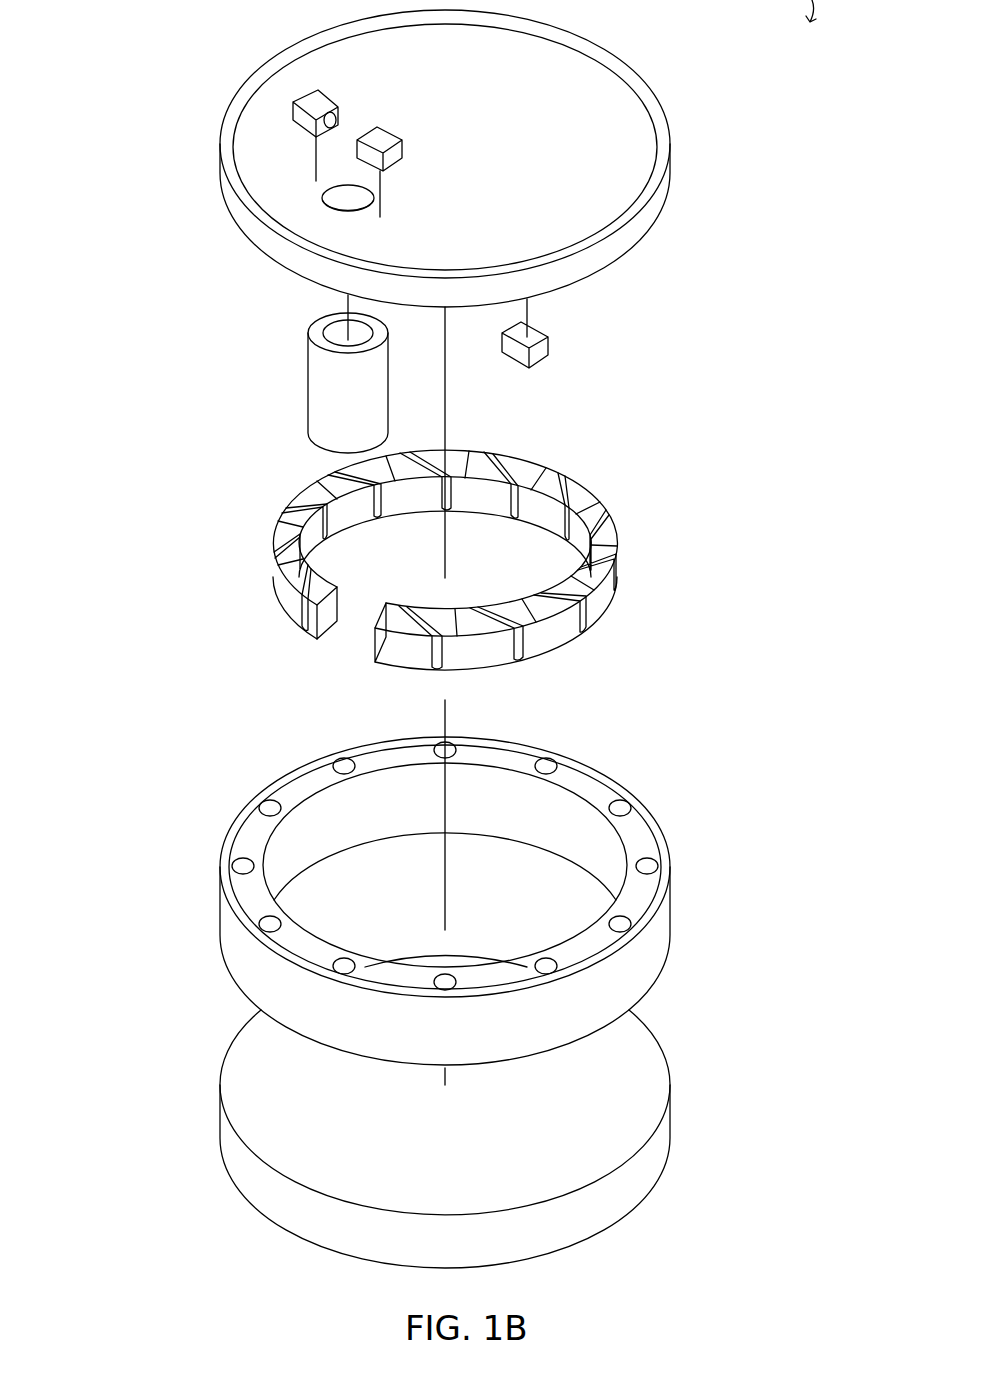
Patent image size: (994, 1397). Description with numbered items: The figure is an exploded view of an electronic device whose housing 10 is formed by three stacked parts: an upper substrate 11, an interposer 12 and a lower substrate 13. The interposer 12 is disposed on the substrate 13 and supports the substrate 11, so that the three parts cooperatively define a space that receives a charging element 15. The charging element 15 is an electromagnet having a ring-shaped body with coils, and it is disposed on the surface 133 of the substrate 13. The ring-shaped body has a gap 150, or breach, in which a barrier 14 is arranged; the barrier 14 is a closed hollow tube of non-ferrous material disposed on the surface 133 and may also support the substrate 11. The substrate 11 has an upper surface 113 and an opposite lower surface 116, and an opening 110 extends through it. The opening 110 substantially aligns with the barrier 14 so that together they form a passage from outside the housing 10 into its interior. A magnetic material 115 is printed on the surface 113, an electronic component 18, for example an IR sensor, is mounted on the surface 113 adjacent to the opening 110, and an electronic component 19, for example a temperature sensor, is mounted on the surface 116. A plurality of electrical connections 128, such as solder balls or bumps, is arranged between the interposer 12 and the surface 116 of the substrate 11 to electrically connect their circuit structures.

The housing 10 is at (82, 333).
The substrate 11 is at (263, 247).
The opening 110 is at (322, 188).
The surface 113 is at (647, 96).
The magnetic material 115 is at (617, 145).
The surface 116 is at (648, 237).
The electronic component 18 is at (310, 100).
The electronic component 19 is at (537, 340).
The barrier 14 is at (320, 383).
The charging element 15 is at (603, 560).
The gap 150 is at (337, 622).
The interposer 12 is at (223, 843).
The electrical connections 128 is at (618, 808).
The substrate 13 is at (235, 1073).
The surface 133 is at (635, 1067).